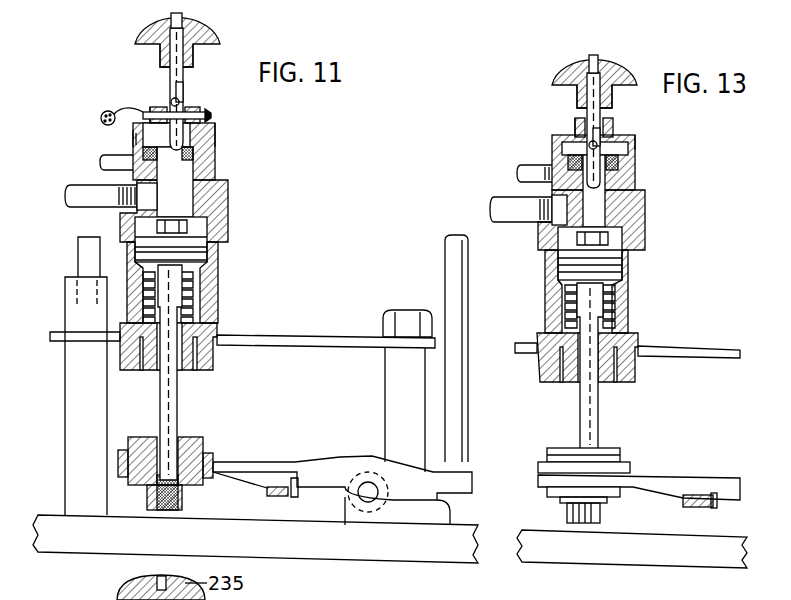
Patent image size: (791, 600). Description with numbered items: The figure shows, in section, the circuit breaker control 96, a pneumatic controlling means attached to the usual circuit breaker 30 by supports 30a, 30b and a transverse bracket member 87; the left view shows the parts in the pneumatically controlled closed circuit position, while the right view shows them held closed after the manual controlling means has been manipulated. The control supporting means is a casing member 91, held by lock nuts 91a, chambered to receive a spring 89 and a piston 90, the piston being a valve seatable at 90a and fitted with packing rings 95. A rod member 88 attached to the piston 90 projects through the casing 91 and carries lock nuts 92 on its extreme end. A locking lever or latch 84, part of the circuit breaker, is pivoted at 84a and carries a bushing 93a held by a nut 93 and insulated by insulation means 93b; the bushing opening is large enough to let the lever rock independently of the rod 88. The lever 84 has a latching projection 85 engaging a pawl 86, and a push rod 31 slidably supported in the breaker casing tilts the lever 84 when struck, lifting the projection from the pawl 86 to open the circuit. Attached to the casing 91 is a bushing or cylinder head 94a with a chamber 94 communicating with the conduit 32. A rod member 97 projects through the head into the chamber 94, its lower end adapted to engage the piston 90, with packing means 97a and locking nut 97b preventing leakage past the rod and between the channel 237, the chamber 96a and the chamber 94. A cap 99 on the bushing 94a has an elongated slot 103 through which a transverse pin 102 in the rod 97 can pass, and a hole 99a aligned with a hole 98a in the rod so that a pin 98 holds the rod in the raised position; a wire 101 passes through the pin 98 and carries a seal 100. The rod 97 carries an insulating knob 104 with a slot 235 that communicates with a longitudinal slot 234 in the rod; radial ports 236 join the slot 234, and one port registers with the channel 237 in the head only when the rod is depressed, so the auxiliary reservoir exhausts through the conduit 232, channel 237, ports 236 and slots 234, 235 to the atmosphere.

In FIG. 11, the circuit breaker 30 is at (263, 547).
In FIG. 13, the circuit breaker 30 is at (632, 560).
In FIG. 11, the support 30a is at (70, 410).
In FIG. 11, the support 30b is at (393, 380).
In FIG. 11, the push rod 31 is at (462, 317).
In FIG. 11, the conduit 32 is at (82, 190).
In FIG. 13, the conduit 32 is at (503, 200).
In FIG. 11, the locking lever or latch 84 is at (358, 462).
In FIG. 13, the locking lever or latch 84 is at (707, 478).
In FIG. 11, the pivot axis 84a is at (362, 486).
In FIG. 11, the latching projection 85 is at (296, 496).
In FIG. 13, the latching projection 85 is at (714, 505).
In FIG. 11, the pawl 86 is at (277, 496).
In FIG. 13, the pawl 86 is at (693, 507).
In FIG. 11, the transverse bracket member 87 is at (327, 338).
In FIG. 13, the transverse bracket member 87 is at (687, 348).
In FIG. 11, the rod member 88 is at (173, 413).
In FIG. 13, the rod member 88 is at (597, 420).
In FIG. 11, the spring 89 is at (200, 298).
In FIG. 13, the spring 89 is at (612, 302).
In FIG. 11, the piston 90 is at (188, 265).
In FIG. 13, the piston 90 is at (607, 275).
In FIG. 11, the valve seat 90a is at (133, 268).
In FIG. 13, the valve seat 90a is at (558, 285).
In FIG. 11, the casing member 91 is at (205, 327).
In FIG. 13, the casing member 91 is at (637, 337).
In FIG. 11, the lock nuts 91a is at (213, 365).
In FIG. 13, the lock nuts 91a is at (636, 378).
In FIG. 11, the lock nuts 92 is at (148, 505).
In FIG. 13, the lock nuts 92 is at (567, 515).
In FIG. 11, the nut 93 is at (200, 438).
In FIG. 13, the nut 93 is at (618, 452).
In FIG. 11, the bushing 93a is at (198, 486).
In FIG. 13, the bushing 93a is at (613, 497).
In FIG. 11, the insulation means 93b is at (213, 456).
In FIG. 13, the insulation means 93b is at (630, 470).
In FIG. 11, the chamber 94 is at (210, 184).
In FIG. 13, the chamber 94 is at (605, 215).
In FIG. 11, the bushing or cylinder head 94a is at (187, 203).
In FIG. 13, the bushing or cylinder head 94a is at (607, 218).
In FIG. 11, the packing means or rings 95 is at (207, 238).
In FIG. 13, the packing means or rings 95 is at (617, 257).
In FIG. 11, the circuit breaker control 96 is at (215, 150).
In FIG. 13, the circuit breaker control 96 is at (637, 165).
In FIG. 11, the chamber 96a is at (216, 135).
In FIG. 13, the chamber 96a is at (636, 145).
In FIG. 11, the rod member 97 is at (186, 94).
In FIG. 13, the rod member 97 is at (612, 115).
In FIG. 11, the packing means 97a is at (208, 160).
In FIG. 13, the packing means 97a is at (578, 162).
In FIG. 11, the locking nut 97b is at (143, 137).
In FIG. 13, the locking nut 97b is at (557, 137).
In FIG. 11, the pin 98 is at (210, 115).
In FIG. 11, the hole 98a is at (196, 95).
In FIG. 11, the cap 99 is at (158, 108).
In FIG. 13, the cap 99 is at (613, 132).
In FIG. 11, the hole 99a is at (148, 105).
In FIG. 13, the hole 99a is at (577, 125).
In FIG. 11, the seal 100 is at (106, 111).
In FIG. 11, the wire 101 is at (122, 105).
In FIG. 11, the pin 102 is at (181, 90).
In FIG. 13, the pin 102 is at (585, 142).
In FIG. 11, the elongated slot 103 is at (198, 110).
In FIG. 13, the elongated slot 103 is at (577, 120).
In FIG. 11, the handle or insulating knob 104 is at (218, 36).
In FIG. 13, the handle or insulating knob 104 is at (558, 64).
In FIG. 11, the conduit 232 is at (115, 182).
In FIG. 11, the longitudinal slot 234 is at (193, 65).
In FIG. 13, the longitudinal slot 234 is at (580, 97).
In FIG. 11, the slot 235 is at (140, 30).
In FIG. 13, the slot 235 is at (613, 60).
In FIG. 11, the radial ports 236 is at (125, 135).
In FIG. 13, the radial ports 236 is at (637, 172).
In FIG. 11, the channel 237 is at (133, 148).
In FIG. 13, the channel 237 is at (537, 222).